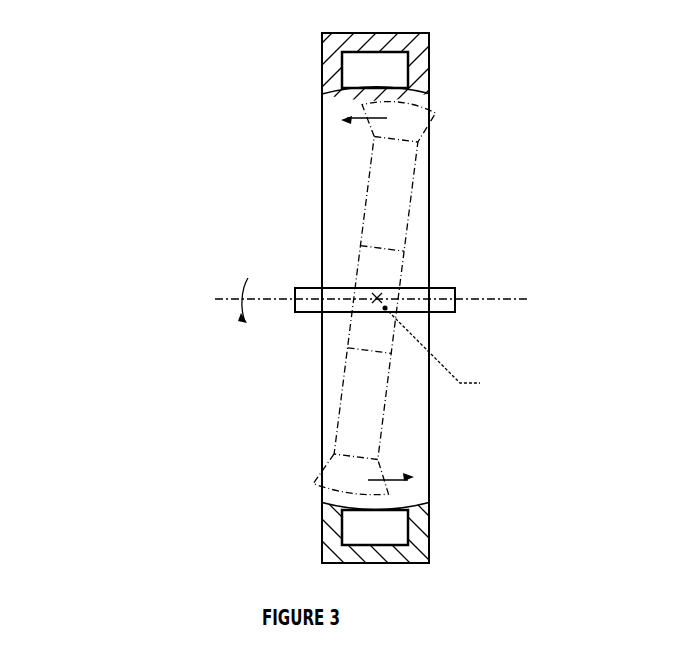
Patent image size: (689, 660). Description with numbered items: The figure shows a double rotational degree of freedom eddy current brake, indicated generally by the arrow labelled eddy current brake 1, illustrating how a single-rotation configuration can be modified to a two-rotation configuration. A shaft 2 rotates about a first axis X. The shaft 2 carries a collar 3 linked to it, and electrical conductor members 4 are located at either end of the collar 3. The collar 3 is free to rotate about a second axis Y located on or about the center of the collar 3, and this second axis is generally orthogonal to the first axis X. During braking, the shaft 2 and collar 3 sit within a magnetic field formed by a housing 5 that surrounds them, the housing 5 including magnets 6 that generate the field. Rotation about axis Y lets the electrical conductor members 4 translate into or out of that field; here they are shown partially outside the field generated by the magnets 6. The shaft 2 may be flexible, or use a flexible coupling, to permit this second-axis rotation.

The eddy current brake 1 is at (142, 298).
The shaft 2 is at (446, 293).
The collar 3 is at (383, 188).
The electrical conductor members 4 is at (417, 128).
The housing 5 is at (422, 44).
The magnets 6 is at (355, 66).